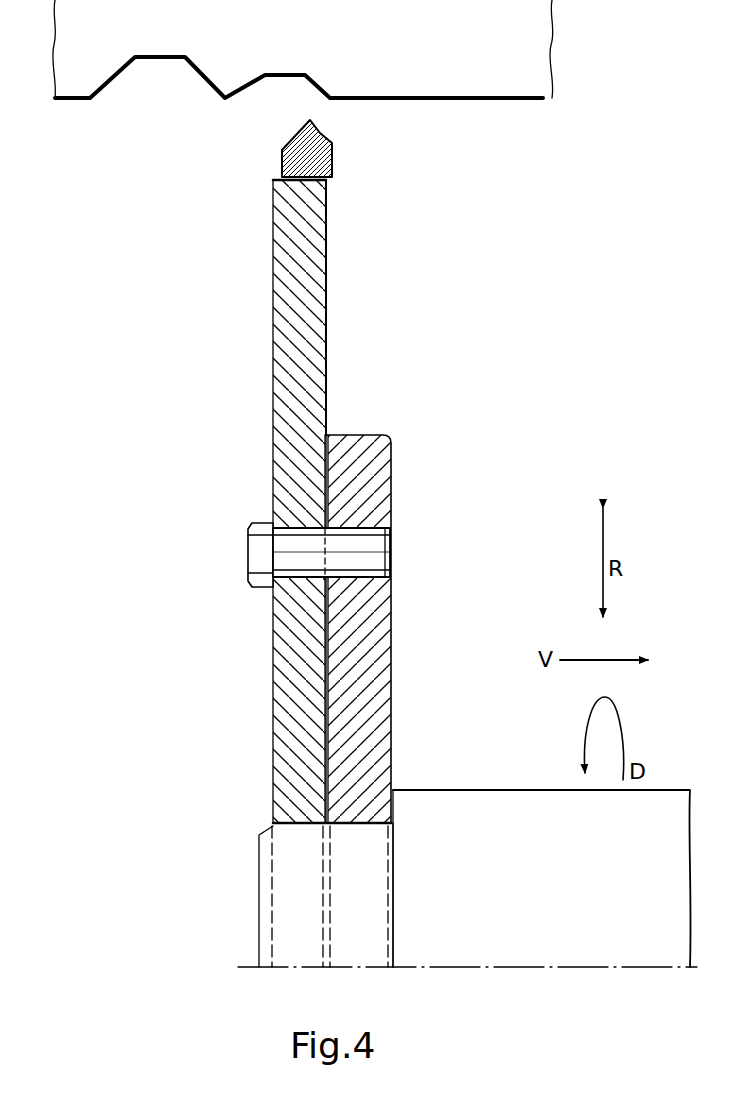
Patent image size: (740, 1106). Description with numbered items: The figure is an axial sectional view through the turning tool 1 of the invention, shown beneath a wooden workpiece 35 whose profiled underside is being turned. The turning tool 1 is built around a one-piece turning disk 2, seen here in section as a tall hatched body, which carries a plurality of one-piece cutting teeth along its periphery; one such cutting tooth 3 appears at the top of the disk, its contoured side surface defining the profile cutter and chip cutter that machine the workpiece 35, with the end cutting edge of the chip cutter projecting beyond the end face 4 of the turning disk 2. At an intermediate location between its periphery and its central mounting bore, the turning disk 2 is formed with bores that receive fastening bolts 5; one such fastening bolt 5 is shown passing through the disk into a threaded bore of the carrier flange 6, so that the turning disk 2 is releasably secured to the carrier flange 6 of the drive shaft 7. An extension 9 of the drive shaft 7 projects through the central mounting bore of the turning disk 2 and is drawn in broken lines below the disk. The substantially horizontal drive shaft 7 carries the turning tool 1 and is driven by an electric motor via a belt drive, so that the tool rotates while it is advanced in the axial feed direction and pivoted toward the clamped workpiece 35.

The turning tool 1 is at (208, 318).
The turning disk 2 is at (292, 297).
The cutting tooth 3 is at (318, 121).
The end face 4 is at (327, 355).
The fastening bolt 5 is at (287, 557).
The carrier flange 6 is at (380, 480).
The drive shaft 7 is at (468, 800).
The extension 9 is at (268, 886).
The wooden workpiece 35 is at (503, 38).